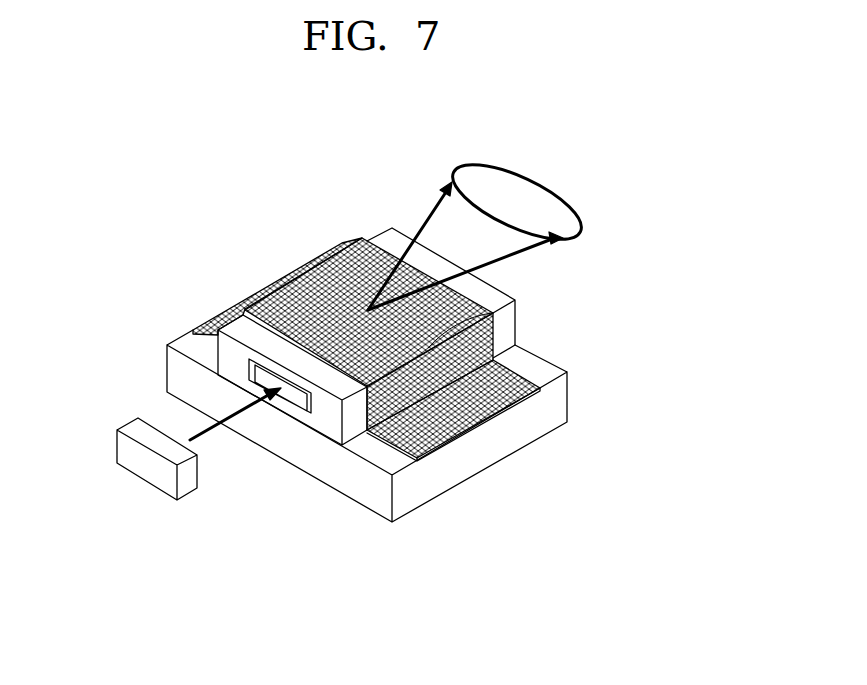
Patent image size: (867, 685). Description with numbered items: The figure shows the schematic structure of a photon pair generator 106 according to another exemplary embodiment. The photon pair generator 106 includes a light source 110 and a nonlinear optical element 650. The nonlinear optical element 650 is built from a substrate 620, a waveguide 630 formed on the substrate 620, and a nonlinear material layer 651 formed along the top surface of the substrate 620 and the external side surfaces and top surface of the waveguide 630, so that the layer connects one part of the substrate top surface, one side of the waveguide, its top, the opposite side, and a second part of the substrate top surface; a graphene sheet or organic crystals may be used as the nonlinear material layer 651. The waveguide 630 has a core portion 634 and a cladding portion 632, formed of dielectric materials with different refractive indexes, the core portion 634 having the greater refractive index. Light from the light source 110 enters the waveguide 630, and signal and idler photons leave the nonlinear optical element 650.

The photon pair generator 106 is at (655, 217).
The light source 110 is at (130, 430).
The substrate 620 is at (185, 343).
The waveguide 630 is at (292, 463).
The cladding portion 632 is at (327, 421).
The core portion 634 is at (300, 404).
The nonlinear optical element 650 is at (348, 333).
The nonlinear material layer 651 is at (243, 272).